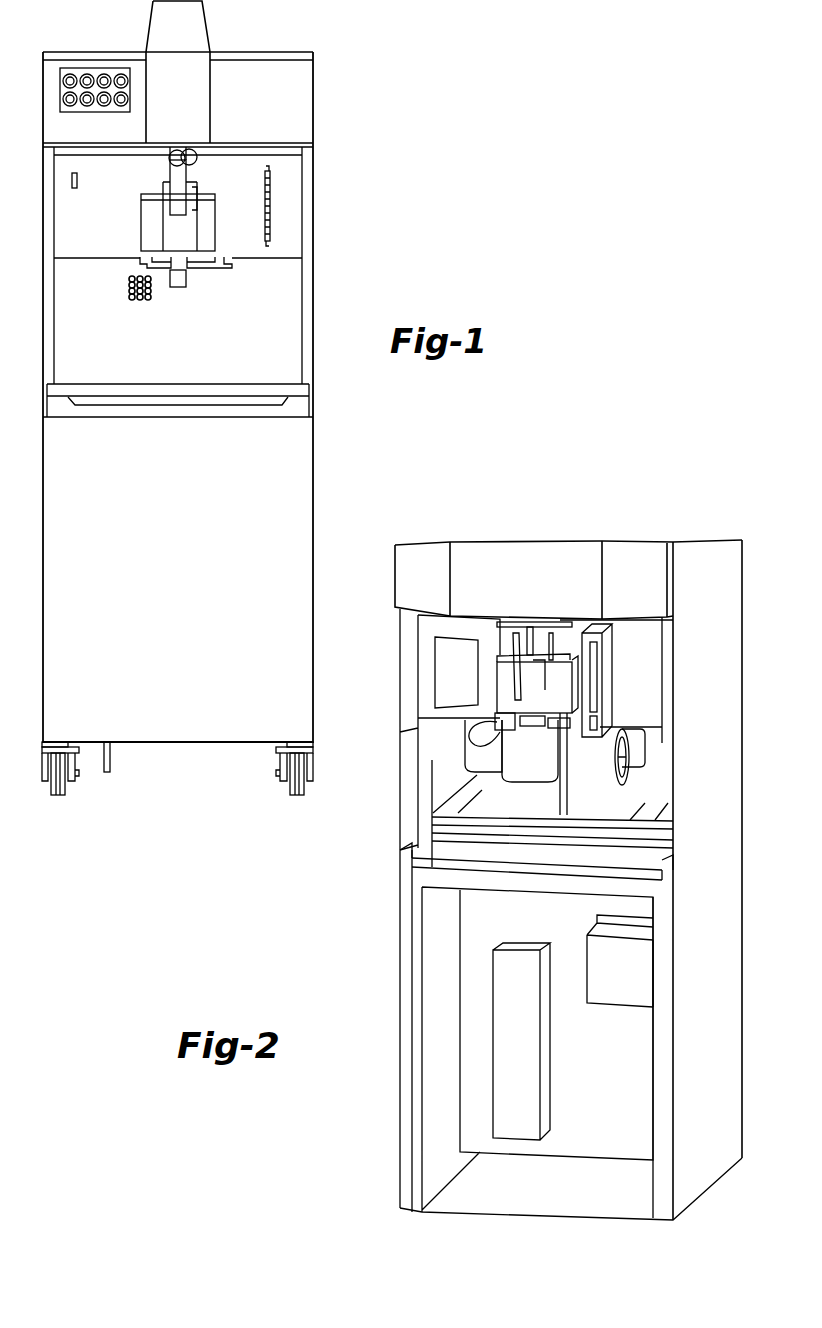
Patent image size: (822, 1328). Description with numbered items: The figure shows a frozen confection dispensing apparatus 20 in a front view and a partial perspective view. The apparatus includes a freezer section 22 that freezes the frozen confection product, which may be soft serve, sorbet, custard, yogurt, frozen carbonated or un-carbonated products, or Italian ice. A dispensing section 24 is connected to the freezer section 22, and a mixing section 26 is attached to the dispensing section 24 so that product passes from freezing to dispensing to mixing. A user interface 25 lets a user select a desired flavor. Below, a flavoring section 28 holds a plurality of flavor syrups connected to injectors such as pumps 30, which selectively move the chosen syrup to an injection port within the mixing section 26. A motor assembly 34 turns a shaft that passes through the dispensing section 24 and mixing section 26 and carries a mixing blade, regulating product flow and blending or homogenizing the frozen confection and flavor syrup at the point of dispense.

In FIG. 1, the frozen confection dispensing apparatus 20 is at (366, 86).
In FIG. 2, the frozen confection dispensing apparatus 20 is at (722, 509).
In FIG. 2, the freezer section 22 is at (606, 778).
In FIG. 1, the dispensing section 24 is at (141, 222).
In FIG. 2, the dispensing section 24 is at (497, 685).
In FIG. 1, the user interface 25 is at (270, 210).
In FIG. 2, the user interface 25 is at (605, 683).
In FIG. 1, the mixing section 26 is at (187, 278).
In FIG. 2, the mixing section 26 is at (520, 735).
In FIG. 2, the flavoring section 28 is at (381, 1078).
In FIG. 2, the pumps 30 is at (513, 1047).
In FIG. 2, the motor assembly 34 is at (548, 625).